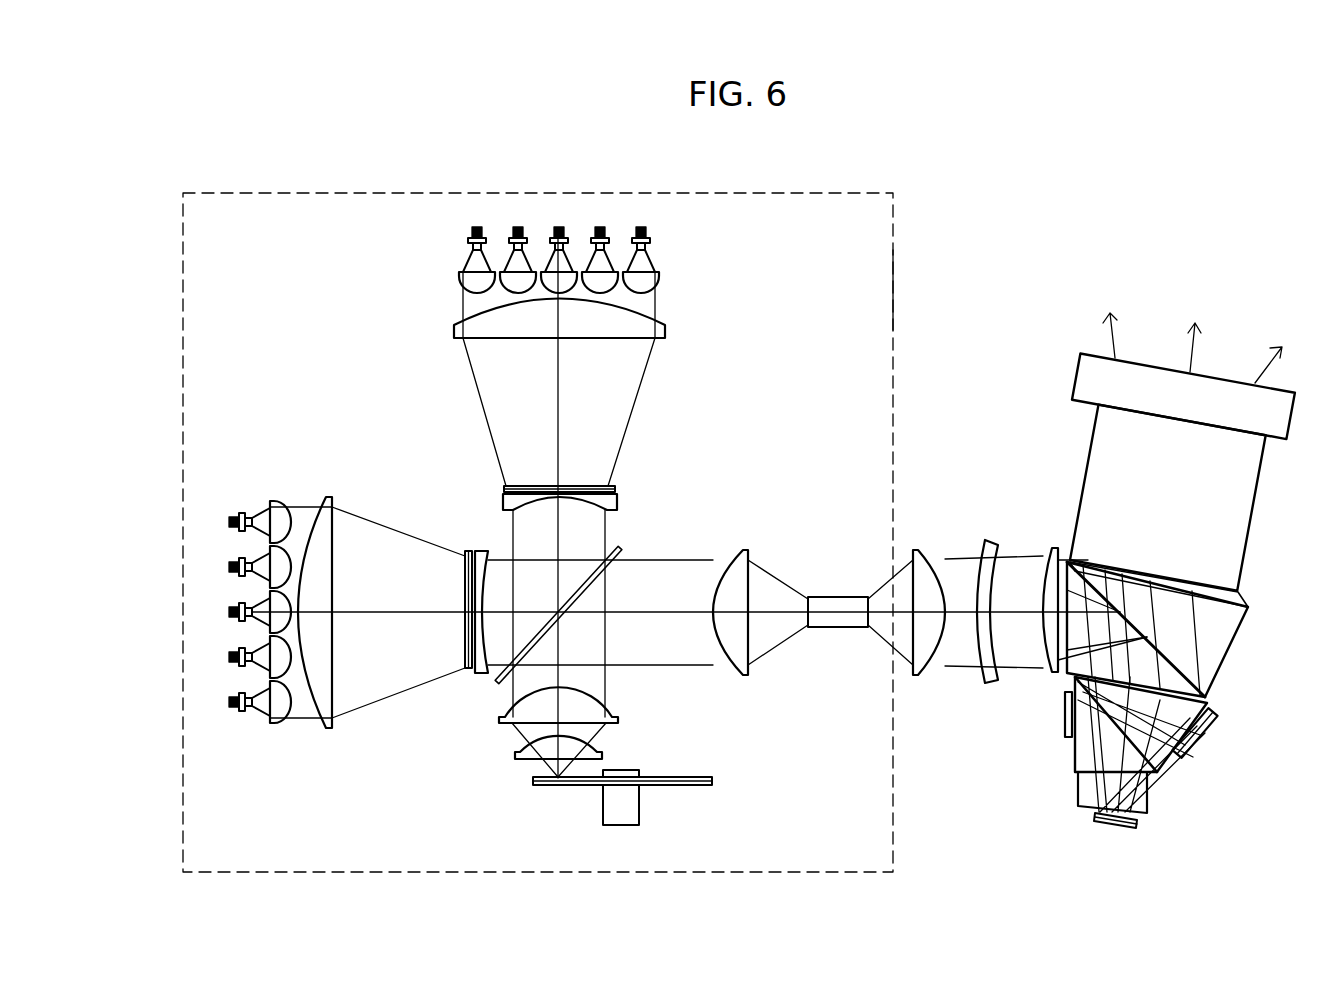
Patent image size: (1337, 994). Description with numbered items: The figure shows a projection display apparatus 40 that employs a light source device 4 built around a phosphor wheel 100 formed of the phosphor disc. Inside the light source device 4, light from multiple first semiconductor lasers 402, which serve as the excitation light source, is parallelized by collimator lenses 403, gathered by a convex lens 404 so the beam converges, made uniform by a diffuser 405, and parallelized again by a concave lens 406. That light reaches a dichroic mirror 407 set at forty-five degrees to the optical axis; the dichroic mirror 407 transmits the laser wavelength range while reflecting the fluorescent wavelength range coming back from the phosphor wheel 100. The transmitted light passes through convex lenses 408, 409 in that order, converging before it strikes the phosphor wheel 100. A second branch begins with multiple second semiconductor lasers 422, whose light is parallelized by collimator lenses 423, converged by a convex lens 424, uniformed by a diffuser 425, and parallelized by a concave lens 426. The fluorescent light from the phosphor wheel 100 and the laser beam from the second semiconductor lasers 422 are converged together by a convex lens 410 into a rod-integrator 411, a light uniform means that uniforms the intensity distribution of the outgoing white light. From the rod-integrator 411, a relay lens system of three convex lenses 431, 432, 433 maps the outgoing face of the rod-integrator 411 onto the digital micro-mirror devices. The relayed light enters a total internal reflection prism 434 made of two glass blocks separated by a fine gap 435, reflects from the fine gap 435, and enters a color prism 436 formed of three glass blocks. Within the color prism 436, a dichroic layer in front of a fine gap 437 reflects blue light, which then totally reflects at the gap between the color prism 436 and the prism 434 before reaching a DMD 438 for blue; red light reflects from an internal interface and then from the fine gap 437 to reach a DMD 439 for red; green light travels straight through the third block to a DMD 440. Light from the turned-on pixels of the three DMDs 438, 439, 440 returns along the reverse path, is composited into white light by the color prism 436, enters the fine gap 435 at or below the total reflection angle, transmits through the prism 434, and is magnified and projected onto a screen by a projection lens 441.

The light source device 4 is at (895, 288).
The projection display apparatus 40 is at (1185, 203).
The phosphor wheel 100 is at (680, 790).
The first semiconductor lasers 402 is at (466, 240).
The collimator lenses 403 is at (462, 278).
The convex lens 404 is at (456, 334).
The diffuser 405 is at (505, 485).
The concave lens 406 is at (501, 497).
The dichroic mirror 407 is at (492, 688).
The convex lens 408 is at (502, 731).
The convex lens 409 is at (517, 760).
The convex lens 410 is at (745, 548).
The rod-integrator 411 is at (835, 632).
The second semiconductor lasers 422 is at (240, 512).
The collimator lenses 423 is at (278, 720).
The convex lens 424 is at (320, 725).
The diffuser 425 is at (468, 668).
The concave lens 426 is at (471, 673).
The convex lens 431 is at (917, 548).
The convex lens 432 is at (992, 678).
The convex lens 433 is at (1048, 548).
The total internal reflection prism 434 is at (1250, 607).
The fine gap 435 is at (1195, 680).
The color prism 436 is at (1078, 787).
The fine gap 437 is at (1170, 756).
The DMD for blue color 438 is at (1215, 727).
The DMD for red color 439 is at (1064, 722).
The DMD for green color 440 is at (1112, 828).
The projection lens 441 is at (1088, 457).